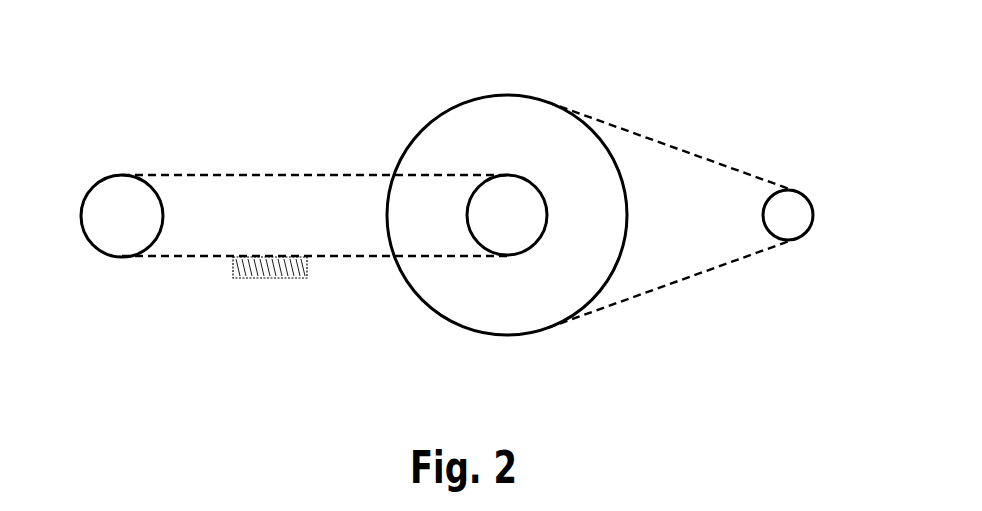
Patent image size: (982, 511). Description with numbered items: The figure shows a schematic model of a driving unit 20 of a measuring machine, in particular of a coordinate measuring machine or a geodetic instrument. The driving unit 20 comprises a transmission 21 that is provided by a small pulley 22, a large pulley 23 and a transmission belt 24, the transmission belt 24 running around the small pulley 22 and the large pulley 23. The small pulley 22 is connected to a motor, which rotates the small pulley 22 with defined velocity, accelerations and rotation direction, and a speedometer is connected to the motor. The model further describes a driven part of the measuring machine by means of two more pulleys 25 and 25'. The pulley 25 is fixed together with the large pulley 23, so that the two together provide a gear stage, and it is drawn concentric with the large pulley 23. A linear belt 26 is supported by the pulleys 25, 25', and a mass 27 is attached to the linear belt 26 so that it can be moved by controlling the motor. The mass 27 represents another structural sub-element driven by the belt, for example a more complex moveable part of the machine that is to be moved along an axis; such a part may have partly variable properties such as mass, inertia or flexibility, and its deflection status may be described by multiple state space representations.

The driving unit 20 is at (167, 44).
The transmission 21 is at (742, 110).
The small pulley 22 is at (814, 209).
The large pulley 23 is at (507, 233).
The transmission belt 24 is at (672, 215).
The pulley 25 is at (492, 277).
The pulley 25' is at (111, 236).
The linear belt 26 is at (314, 196).
The mass 27 is at (257, 288).